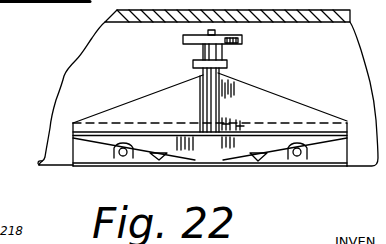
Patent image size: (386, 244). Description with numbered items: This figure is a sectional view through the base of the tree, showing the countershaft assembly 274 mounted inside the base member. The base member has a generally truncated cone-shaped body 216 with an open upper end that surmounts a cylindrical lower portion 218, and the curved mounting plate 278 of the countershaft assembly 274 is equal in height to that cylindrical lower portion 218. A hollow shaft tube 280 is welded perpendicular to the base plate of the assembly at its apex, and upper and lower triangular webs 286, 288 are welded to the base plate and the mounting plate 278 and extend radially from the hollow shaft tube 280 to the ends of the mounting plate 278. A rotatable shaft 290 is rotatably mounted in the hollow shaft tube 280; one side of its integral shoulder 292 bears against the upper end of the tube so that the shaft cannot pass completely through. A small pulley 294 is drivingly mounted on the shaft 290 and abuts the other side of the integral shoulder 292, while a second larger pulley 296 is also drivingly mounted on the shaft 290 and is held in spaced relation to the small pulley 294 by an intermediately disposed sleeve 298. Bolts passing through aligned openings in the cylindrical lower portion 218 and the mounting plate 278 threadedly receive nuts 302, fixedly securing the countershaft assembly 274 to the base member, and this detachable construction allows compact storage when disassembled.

The truncated cone-shaped body 216 is at (66, 79).
The cylindrical lower portion 218 is at (45, 166).
The countershaft assembly 274 is at (258, 74).
The curved mounting plate 278 is at (77, 160).
The hollow shaft tube 280 is at (219, 97).
The upper triangular web 286 is at (137, 100).
The lower triangular web 288 is at (158, 159).
The rotatable shaft 290 is at (214, 32).
The integral shoulder 292 is at (204, 78).
The small pulley 294 is at (221, 61).
The second larger pulley 296 is at (183, 40).
The sleeve 298 is at (203, 52).
The nuts 302 is at (297, 161).